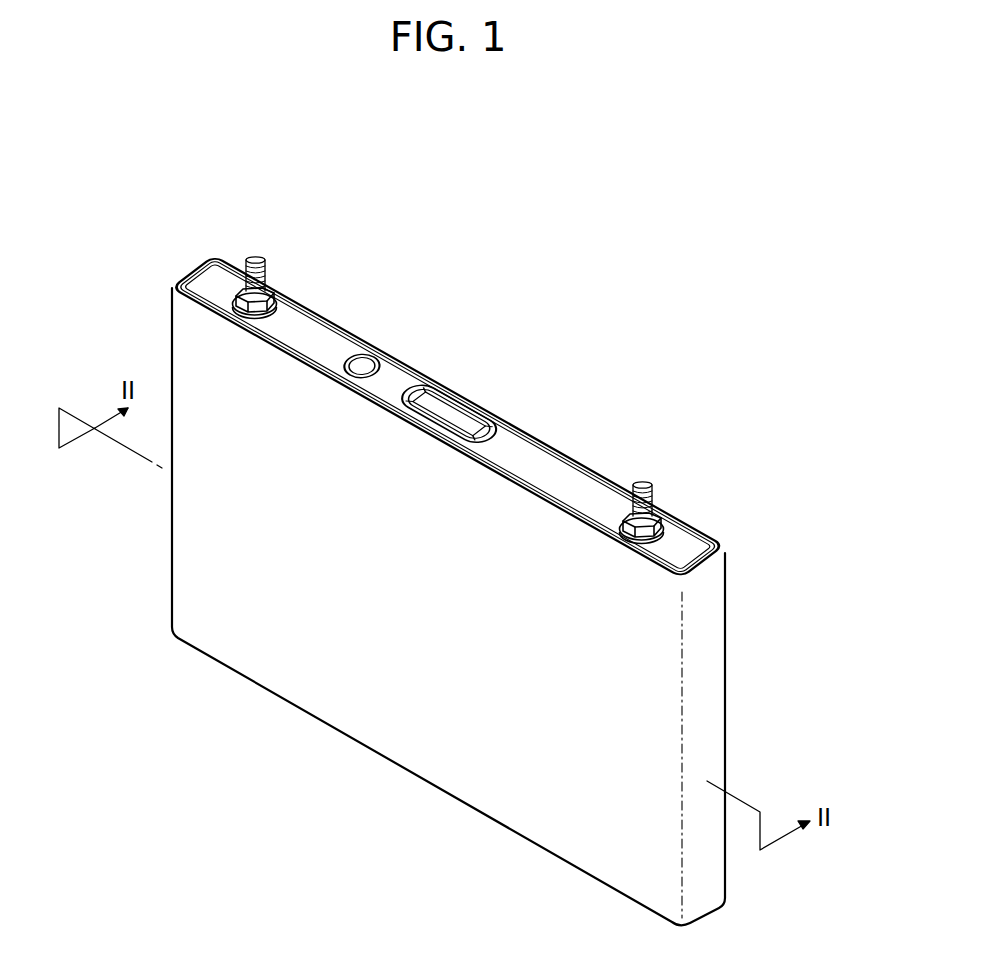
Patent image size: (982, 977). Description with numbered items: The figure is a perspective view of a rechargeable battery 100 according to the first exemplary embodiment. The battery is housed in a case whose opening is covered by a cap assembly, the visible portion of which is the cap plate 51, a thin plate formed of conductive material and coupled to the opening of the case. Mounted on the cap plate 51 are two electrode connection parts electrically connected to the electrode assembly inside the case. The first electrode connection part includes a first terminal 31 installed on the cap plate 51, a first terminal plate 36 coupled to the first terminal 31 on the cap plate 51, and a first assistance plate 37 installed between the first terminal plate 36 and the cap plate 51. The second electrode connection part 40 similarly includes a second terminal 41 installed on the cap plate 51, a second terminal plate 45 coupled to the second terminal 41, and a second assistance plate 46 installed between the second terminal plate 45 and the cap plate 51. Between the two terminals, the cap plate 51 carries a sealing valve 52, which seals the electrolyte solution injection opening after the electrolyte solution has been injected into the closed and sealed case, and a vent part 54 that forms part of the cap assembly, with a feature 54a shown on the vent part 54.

The rechargeable battery 100 is at (442, 182).
The first terminal 31 is at (255, 256).
The first terminal plate 36 is at (266, 289).
The first assistance plate 37 is at (277, 309).
The second electrode connection part 40 is at (437, 748).
The second terminal 41 is at (643, 482).
The second terminal plate 45 is at (657, 512).
The second assistance plate 46 is at (679, 535).
The cap plate 51 is at (412, 367).
The sealing valve 52 is at (362, 360).
The vent part 54 is at (445, 402).
The sealing cap 54a is at (458, 415).